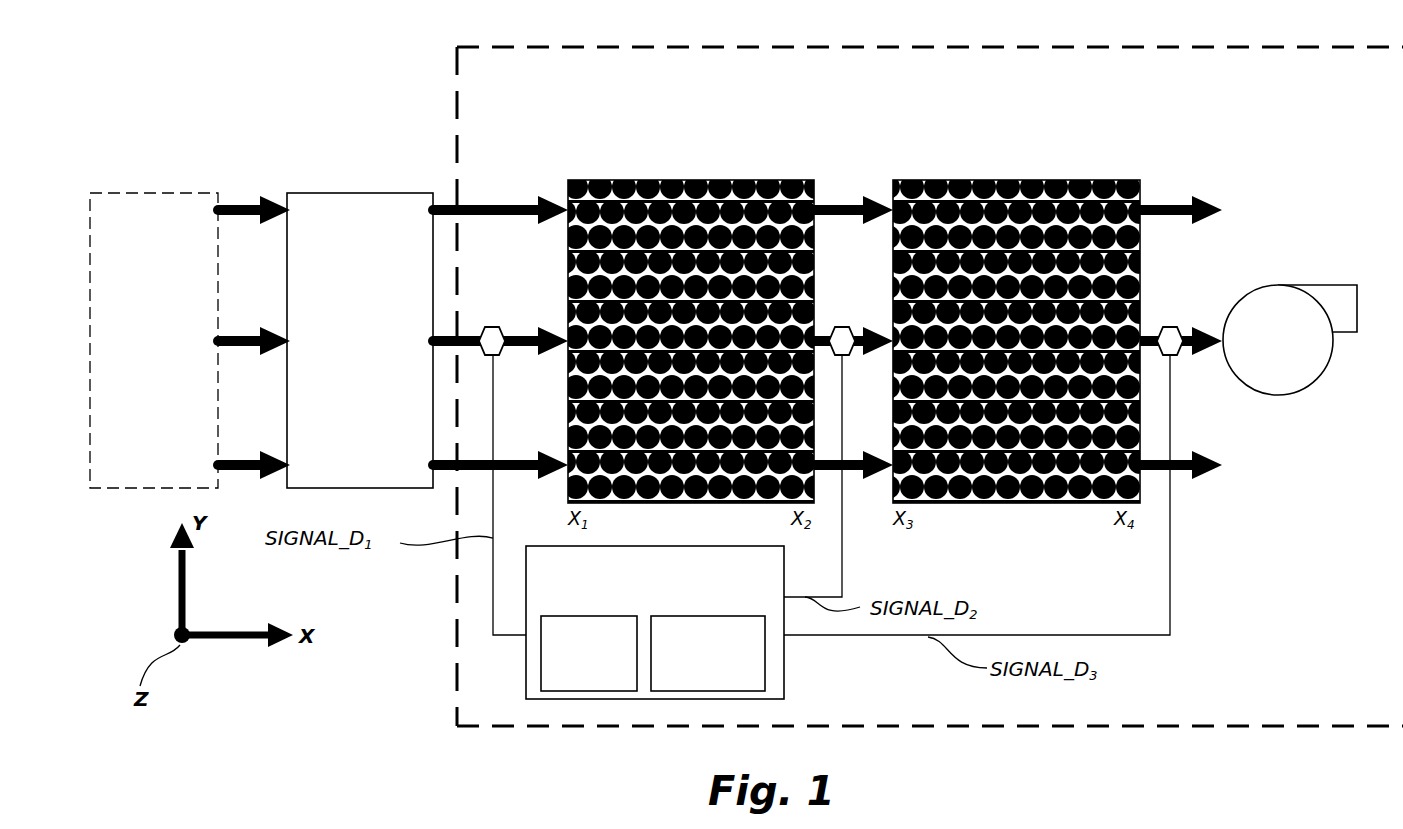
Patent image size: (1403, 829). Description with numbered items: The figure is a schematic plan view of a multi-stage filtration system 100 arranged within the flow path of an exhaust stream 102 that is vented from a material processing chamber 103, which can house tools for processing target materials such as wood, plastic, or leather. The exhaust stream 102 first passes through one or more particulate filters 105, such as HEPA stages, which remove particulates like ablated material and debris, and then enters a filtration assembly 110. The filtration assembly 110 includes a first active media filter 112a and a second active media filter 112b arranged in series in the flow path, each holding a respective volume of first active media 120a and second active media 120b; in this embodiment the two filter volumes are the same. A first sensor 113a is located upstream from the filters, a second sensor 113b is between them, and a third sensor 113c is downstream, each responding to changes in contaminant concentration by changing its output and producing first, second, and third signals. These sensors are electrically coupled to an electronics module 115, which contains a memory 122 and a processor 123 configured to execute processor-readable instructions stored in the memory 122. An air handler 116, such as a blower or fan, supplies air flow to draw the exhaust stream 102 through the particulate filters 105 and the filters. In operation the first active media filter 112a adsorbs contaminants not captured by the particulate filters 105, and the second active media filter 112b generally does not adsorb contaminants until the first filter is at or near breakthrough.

The multi-stage filtration system 100 is at (285, 125).
The exhaust stream 102 is at (238, 335).
The processing chamber 103 is at (154, 340).
The particulate filters 105 is at (360, 340).
The filtration assembly 110 is at (583, 47).
The first active media filter 112a is at (705, 297).
The second active media filter 112b is at (1026, 292).
The first sensor 113a is at (492, 327).
The second sensor 113b is at (842, 327).
The third sensor 113c is at (1170, 327).
The electronics module 115 is at (655, 622).
The air handler 116 is at (1330, 362).
The first active media 120a is at (735, 250).
The second active media 120b is at (1045, 272).
The memory 122 is at (589, 653).
The processor 123 is at (708, 653).